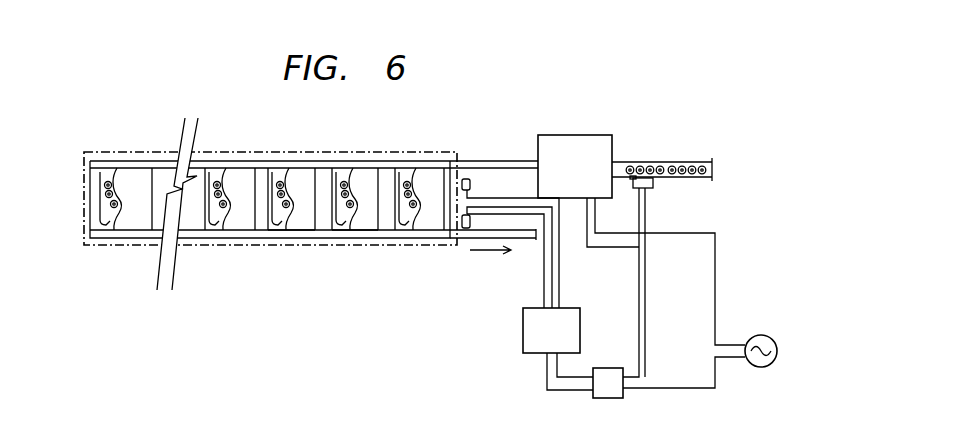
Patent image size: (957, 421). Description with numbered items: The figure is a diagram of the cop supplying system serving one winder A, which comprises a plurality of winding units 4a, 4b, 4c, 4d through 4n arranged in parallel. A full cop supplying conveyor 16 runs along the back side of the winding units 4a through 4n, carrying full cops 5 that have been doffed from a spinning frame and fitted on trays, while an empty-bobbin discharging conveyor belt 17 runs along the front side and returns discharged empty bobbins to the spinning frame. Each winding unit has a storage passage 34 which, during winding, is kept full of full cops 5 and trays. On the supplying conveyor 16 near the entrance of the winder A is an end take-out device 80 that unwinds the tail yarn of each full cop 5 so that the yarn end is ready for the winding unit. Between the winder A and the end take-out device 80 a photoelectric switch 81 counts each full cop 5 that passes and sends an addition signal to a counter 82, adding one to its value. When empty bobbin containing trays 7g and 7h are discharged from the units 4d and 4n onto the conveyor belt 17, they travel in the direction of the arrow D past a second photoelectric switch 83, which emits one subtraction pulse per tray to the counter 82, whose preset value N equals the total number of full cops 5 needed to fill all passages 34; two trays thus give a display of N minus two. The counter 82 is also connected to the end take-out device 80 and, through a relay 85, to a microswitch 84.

The winding unit 4n is at (133, 215).
The winding unit 4d is at (233, 218).
The winding unit 4c is at (310, 220).
The winding unit 4b is at (353, 220).
The winding unit 4a is at (423, 220).
The full cop 5 is at (287, 200).
The empty bobbin containing tray 7h is at (290, 232).
The empty bobbin containing tray 7g is at (368, 235).
The full cop supplying conveyor 16 is at (267, 165).
The empty-bobbin discharging conveyor belt 17 is at (252, 232).
The passage 34 is at (211, 168).
The end take-out device 80 is at (590, 145).
The photoelectric switch 81 is at (467, 177).
The counter 82 is at (558, 349).
The photoelectric switch 83 is at (460, 229).
The microswitch 84 is at (653, 184).
The relay 85 is at (669, 377).
The winder A is at (360, 153).
The arrow D is at (490, 253).